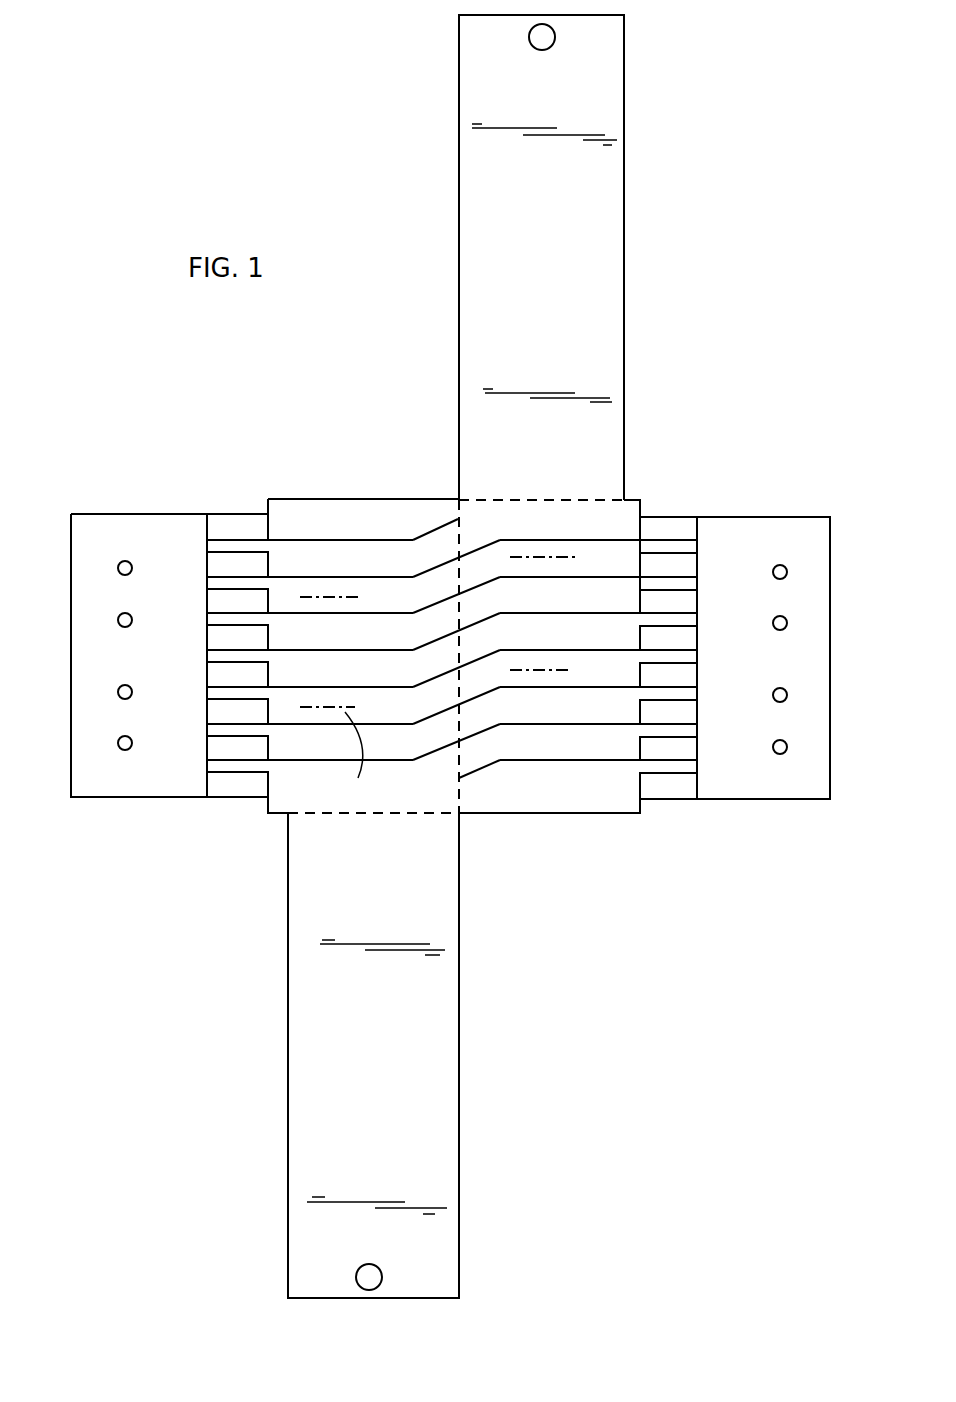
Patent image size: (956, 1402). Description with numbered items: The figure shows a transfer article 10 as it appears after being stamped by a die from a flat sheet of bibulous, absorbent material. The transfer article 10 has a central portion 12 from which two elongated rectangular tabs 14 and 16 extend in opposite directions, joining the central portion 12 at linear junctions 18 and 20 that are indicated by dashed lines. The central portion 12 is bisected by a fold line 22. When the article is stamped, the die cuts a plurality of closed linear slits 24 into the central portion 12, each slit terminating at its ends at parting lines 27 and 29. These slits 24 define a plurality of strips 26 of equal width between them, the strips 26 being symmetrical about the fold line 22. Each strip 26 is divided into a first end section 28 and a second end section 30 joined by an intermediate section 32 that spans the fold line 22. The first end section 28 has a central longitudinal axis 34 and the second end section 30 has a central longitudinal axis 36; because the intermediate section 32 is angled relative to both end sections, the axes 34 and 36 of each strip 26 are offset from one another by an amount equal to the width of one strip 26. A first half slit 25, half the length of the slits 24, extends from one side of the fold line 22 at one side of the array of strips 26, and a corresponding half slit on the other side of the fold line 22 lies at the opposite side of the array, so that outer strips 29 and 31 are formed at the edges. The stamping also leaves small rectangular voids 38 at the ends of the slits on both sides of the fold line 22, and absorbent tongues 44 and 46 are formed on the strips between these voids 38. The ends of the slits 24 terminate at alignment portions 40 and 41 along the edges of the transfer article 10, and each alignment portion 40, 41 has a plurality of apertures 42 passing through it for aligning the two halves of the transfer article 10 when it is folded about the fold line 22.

The transfer article 10 is at (345, 412).
The central portion 12 is at (410, 484).
The elongated rectangular tab 14 is at (564, 309).
The elongated rectangular tab 16 is at (387, 1044).
The linear junction 18 is at (623, 497).
The linear junction 20 is at (347, 815).
The fold line 22 is at (460, 789).
The closed linear slit 24 is at (640, 535).
The first half slit 25 is at (632, 763).
The strip 26 is at (412, 610).
The parting line 27 is at (207, 528).
The first end section 28 is at (282, 543).
The parting line 29 is at (408, 573).
The second end section 30 is at (563, 552).
The outer strip 31 is at (335, 536).
The intermediate section 32 is at (478, 570).
The central longitudinal axis 34 is at (363, 756).
The central longitudinal axis 36 is at (522, 557).
The small rectangular void 38 is at (217, 550).
The alignment portion 40 is at (106, 798).
The alignment portion 41 is at (802, 787).
The aperture 42 is at (122, 575).
The absorbent tongue 44 is at (217, 565).
The absorbent tongue 46 is at (683, 567).